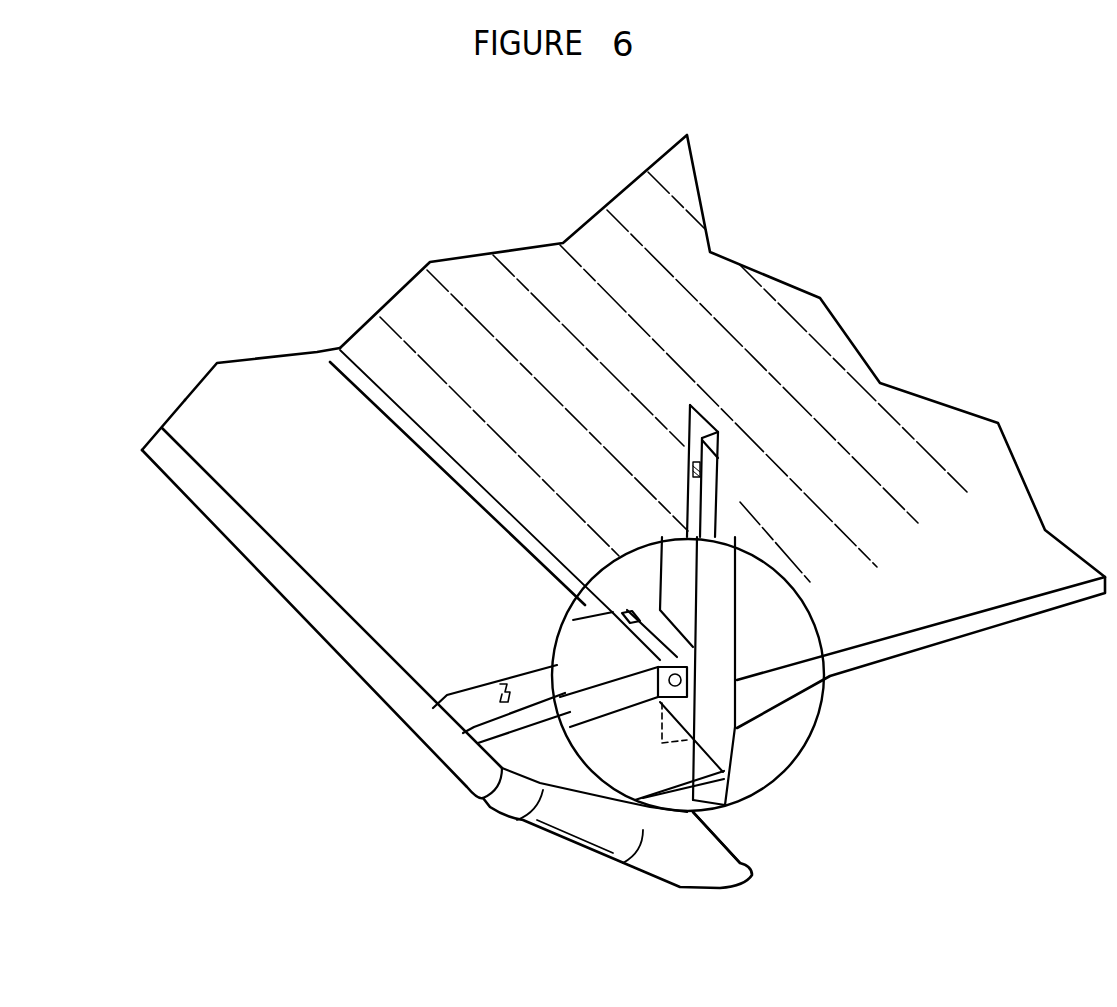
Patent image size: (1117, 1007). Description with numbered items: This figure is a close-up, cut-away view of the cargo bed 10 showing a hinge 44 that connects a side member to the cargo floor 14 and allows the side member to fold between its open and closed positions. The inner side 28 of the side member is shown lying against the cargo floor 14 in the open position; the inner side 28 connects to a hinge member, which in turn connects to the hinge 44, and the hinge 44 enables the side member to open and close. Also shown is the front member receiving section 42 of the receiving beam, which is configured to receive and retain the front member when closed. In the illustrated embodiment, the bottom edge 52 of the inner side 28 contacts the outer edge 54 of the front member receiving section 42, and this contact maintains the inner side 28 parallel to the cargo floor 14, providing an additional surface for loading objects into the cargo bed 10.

The cargo bed 10 is at (366, 190).
The cargo floor 14 is at (917, 560).
The inner side 28 is at (372, 560).
The hinge 44 is at (340, 348).
The front member receiving section 42 is at (722, 643).
The bottom edge 52 is at (722, 770).
The outer edge 54 is at (700, 823).